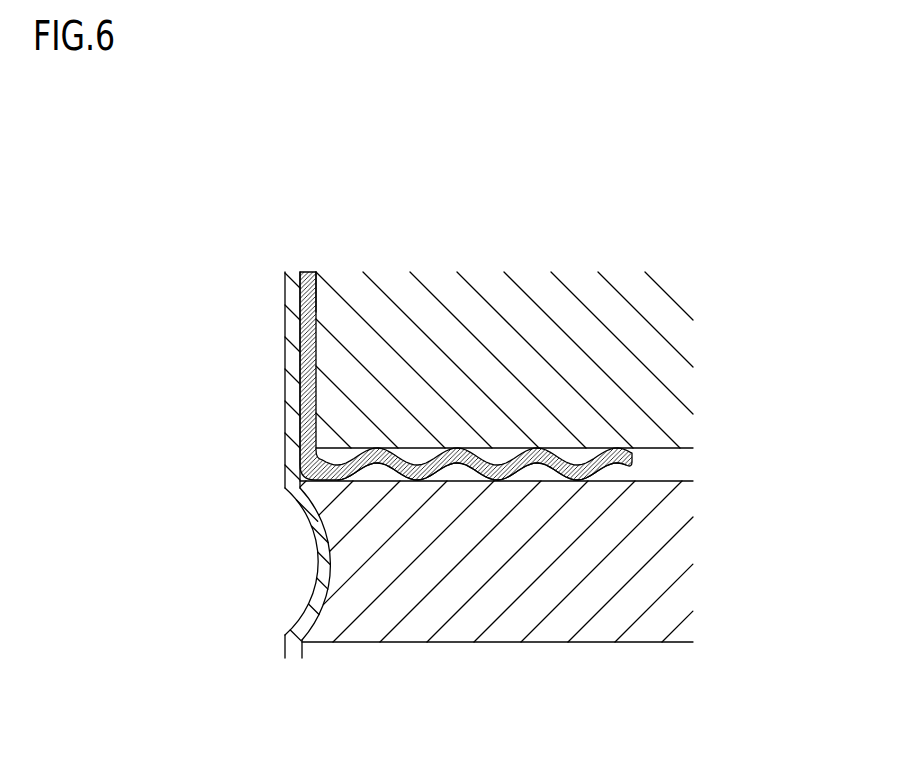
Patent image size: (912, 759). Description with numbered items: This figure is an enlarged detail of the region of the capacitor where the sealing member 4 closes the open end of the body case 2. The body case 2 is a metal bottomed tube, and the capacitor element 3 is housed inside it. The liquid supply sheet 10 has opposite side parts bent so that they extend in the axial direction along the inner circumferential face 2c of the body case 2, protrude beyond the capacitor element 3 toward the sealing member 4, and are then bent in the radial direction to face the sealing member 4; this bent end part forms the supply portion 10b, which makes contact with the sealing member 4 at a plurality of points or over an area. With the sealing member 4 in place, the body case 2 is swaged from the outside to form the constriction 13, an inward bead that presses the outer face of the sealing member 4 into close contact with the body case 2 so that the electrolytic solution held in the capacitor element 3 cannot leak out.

The body case 2 is at (287, 387).
The inner circumferential face 2c is at (315, 308).
The capacitor element 3 is at (713, 349).
The sealing member 4 is at (693, 560).
The liquid supply sheet 10 is at (312, 272).
The supply portion 10b is at (542, 465).
The constriction 13 is at (317, 578).